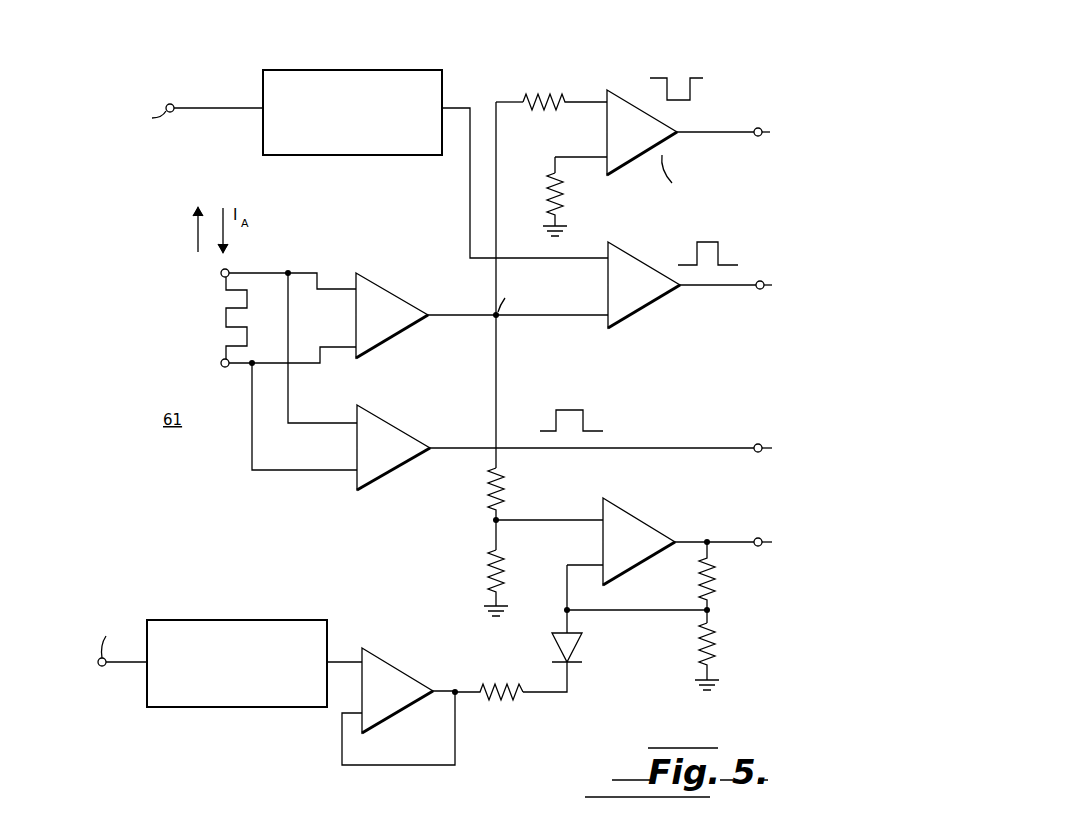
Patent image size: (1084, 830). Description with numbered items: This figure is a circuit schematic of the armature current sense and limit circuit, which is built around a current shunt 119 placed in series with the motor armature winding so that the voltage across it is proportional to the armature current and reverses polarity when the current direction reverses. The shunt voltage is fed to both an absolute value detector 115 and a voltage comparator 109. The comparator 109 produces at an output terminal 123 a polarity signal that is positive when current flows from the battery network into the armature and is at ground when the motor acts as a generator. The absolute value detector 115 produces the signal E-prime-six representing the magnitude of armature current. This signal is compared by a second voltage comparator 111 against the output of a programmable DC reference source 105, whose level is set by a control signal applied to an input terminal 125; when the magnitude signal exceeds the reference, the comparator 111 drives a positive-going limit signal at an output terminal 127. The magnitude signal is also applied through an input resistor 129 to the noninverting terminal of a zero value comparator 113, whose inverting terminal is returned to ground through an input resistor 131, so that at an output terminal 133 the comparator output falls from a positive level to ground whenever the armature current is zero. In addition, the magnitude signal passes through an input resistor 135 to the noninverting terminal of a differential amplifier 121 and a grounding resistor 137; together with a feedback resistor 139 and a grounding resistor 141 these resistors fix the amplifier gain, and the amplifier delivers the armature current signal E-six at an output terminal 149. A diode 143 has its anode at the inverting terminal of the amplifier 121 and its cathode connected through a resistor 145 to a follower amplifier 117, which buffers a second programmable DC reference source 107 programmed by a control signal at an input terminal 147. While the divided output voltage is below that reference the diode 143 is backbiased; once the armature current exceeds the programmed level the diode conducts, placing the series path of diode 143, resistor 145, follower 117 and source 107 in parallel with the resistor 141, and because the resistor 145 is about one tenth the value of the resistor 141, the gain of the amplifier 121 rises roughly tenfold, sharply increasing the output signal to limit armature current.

The programmable DC reference source 105 is at (350, 70).
The programmable DC reference source 107 is at (230, 620).
The voltage comparator 109 is at (405, 428).
The voltage comparator 111 is at (657, 300).
The zero value detector or comparator 113 is at (632, 104).
The absolute value detector 115 is at (398, 290).
The follower amplifier 117 is at (395, 668).
The current shunt 119 is at (242, 301).
The differential amplifier 121 is at (640, 518).
The output terminal 123 is at (759, 444).
The input terminal 125 is at (170, 104).
The output terminal 127 is at (762, 281).
The input resistor 129 is at (538, 96).
The input resistor 131 is at (568, 197).
The output terminal 133 is at (760, 128).
The input resistor 135 is at (488, 490).
The grounding resistor 137 is at (488, 574).
The feedback resistor 139 is at (718, 578).
The grounding resistor 141 is at (718, 642).
The diode 143 is at (580, 655).
The resistor 145 is at (498, 700).
The input terminal 147 is at (102, 666).
The output terminal 149 is at (758, 538).